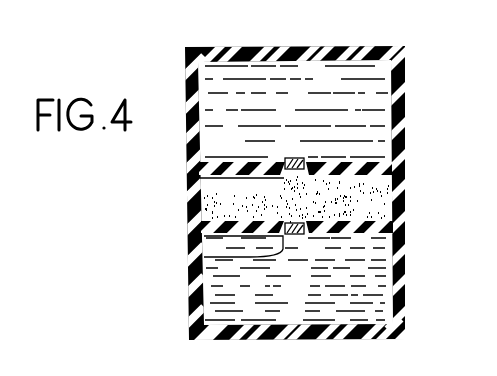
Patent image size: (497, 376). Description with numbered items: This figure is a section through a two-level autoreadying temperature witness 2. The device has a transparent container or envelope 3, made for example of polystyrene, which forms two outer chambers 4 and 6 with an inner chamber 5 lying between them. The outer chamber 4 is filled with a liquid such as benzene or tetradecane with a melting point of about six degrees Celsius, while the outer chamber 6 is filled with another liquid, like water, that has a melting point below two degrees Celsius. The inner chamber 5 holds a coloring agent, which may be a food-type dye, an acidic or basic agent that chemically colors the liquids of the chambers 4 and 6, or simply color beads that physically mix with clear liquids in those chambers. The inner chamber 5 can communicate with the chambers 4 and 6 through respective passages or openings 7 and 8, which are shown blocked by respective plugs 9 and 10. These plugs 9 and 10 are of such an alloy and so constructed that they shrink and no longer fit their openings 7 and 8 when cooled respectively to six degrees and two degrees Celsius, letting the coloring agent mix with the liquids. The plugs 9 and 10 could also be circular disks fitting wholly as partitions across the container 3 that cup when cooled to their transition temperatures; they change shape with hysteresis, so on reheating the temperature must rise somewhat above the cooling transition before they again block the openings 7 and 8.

The two-level autoreadying temperature witness 2 is at (179, 89).
The transparent container 3 is at (395, 166).
The outer chamber 4 is at (360, 122).
The inner chamber 5 is at (362, 206).
The outer chamber 6 is at (367, 281).
The opening 7 is at (284, 178).
The opening 8 is at (204, 258).
The plug 9 is at (290, 158).
The plug 10 is at (297, 234).